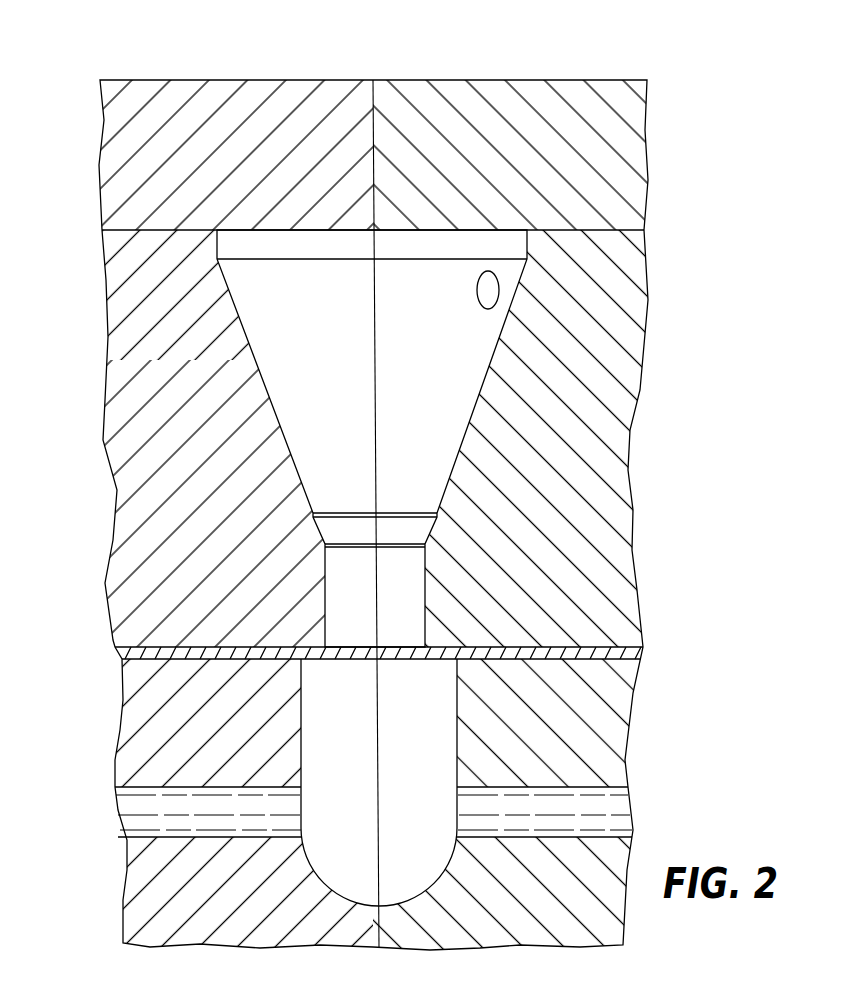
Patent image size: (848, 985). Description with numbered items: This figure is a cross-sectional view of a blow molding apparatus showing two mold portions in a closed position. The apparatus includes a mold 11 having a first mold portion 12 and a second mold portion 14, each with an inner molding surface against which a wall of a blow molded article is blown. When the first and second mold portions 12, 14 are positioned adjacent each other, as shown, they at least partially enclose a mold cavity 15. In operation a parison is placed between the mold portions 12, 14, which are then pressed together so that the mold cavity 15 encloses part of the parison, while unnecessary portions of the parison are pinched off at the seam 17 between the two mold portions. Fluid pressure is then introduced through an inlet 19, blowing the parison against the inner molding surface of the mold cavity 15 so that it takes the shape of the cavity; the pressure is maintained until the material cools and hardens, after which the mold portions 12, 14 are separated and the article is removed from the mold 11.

The mold 11 is at (532, 62).
The first mold portion 12 is at (597, 198).
The second mold portion 14 is at (143, 165).
The mold cavity 15 is at (440, 390).
The seam 17 is at (373, 132).
The inlet 19 is at (465, 792).